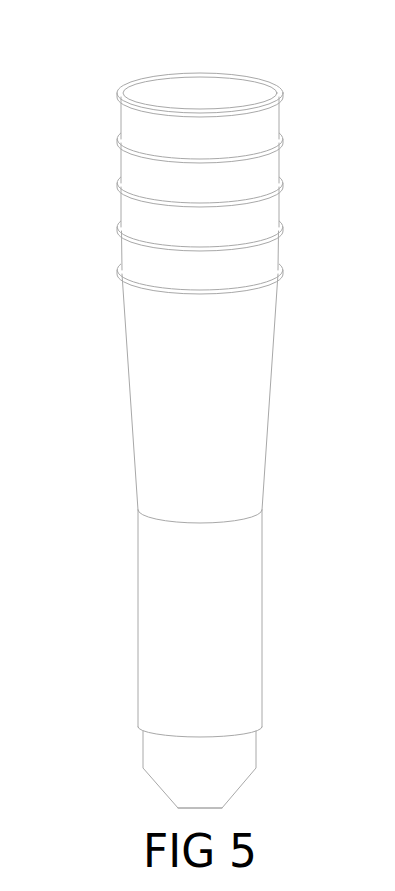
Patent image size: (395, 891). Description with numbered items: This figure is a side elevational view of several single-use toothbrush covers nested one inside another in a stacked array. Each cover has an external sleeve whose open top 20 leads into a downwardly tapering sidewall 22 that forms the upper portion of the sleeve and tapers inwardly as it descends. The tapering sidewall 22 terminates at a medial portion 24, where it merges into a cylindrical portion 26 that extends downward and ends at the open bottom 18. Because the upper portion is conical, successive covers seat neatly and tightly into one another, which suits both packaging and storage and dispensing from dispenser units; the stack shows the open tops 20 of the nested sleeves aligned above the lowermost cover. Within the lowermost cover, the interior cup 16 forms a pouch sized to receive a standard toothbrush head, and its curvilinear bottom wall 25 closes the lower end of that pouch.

The open top 20 is at (262, 78).
The downwardly tapering sidewall 22 is at (133, 122).
The medial portion 24 is at (262, 510).
The cylindrical portion 26 is at (157, 623).
The open bottom end 18 is at (262, 728).
The interior cup 16 is at (163, 755).
The curvilinear bottom wall 25 is at (237, 792).